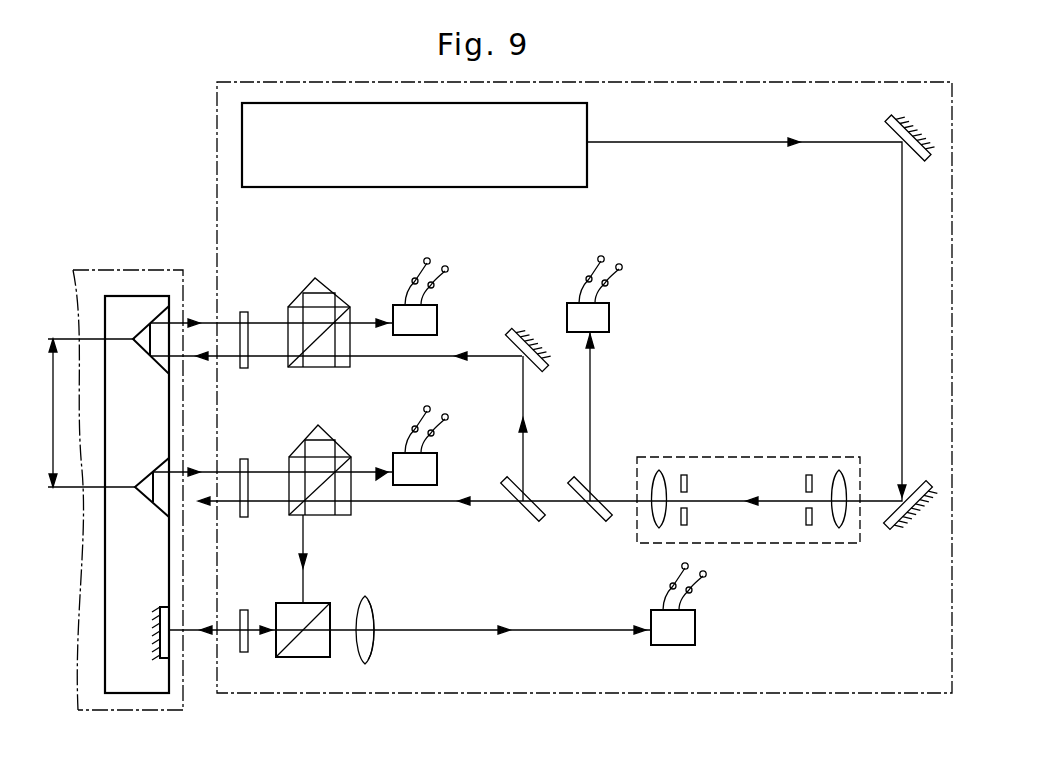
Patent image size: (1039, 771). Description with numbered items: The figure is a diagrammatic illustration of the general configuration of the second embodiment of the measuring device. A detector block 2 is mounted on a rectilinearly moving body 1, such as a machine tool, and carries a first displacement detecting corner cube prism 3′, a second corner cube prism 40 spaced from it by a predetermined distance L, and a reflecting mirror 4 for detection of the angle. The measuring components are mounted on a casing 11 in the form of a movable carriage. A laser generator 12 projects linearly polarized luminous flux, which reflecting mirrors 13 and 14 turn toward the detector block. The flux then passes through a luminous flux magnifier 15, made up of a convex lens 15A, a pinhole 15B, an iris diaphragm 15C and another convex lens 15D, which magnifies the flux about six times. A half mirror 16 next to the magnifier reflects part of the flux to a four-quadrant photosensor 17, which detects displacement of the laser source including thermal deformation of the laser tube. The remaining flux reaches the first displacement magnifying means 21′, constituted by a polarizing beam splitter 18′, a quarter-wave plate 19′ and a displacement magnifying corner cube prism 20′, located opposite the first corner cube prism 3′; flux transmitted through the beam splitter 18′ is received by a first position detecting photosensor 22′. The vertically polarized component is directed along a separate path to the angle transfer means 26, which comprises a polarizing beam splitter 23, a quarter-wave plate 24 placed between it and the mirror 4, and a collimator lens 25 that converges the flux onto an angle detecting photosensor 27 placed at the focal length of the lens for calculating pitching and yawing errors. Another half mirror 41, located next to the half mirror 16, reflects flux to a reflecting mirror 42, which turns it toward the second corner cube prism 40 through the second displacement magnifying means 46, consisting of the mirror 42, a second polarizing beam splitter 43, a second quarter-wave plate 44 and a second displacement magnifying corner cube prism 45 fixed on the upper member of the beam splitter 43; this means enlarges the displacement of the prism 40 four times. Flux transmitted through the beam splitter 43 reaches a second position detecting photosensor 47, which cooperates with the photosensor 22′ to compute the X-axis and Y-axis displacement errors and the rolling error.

The rectilinearly moving body 1 is at (90, 262).
The detector block 2 is at (115, 583).
The first displacement detecting corner cube prism 3′ is at (147, 495).
The reflecting mirror 4 is at (160, 645).
The casing 11 is at (958, 260).
The laser generator 12 is at (548, 189).
The reflecting mirror 13 is at (882, 121).
The reflecting mirror 14 is at (885, 532).
The luminous flux magnifier 15 is at (748, 500).
The convex lens 15A is at (838, 532).
The pinhole 15B is at (810, 530).
The iris diaphragm 15C is at (684, 472).
The convex lens 15D is at (656, 470).
The half mirror 16 is at (593, 520).
The 4-quadrant photosensor 17 is at (609, 318).
The polarizing beam splitter 18′ is at (340, 516).
The quarter-wave plate 19′ is at (243, 458).
The displacement magnifying corner cube prism 20′ is at (323, 433).
The first displacement magnifying means 21′ is at (302, 491).
The first position detecting 4-quadrant photosensor 22′ is at (437, 457).
The polarizing beam splitter 23 is at (318, 660).
The quarter-wave plate 24 is at (246, 654).
The collimator lens 25 is at (366, 666).
The angle transfer means 26 is at (294, 685).
The angle detecting 4-quadrant photosensor 27 is at (695, 630).
The second corner cube prism 40 is at (142, 328).
The half mirror 41 is at (526, 520).
The reflecting mirror 42 is at (523, 331).
The second polarizing beam splitter 43 is at (294, 368).
The second quarter-wave plate 44 is at (242, 310).
The second displacement magnifying corner cube prism 45 is at (318, 291).
The second displacement magnifying means 46 is at (297, 315).
The second position detecting 4-quadrant photosensor 47 is at (403, 304).
The predetermined distance L is at (77, 413).